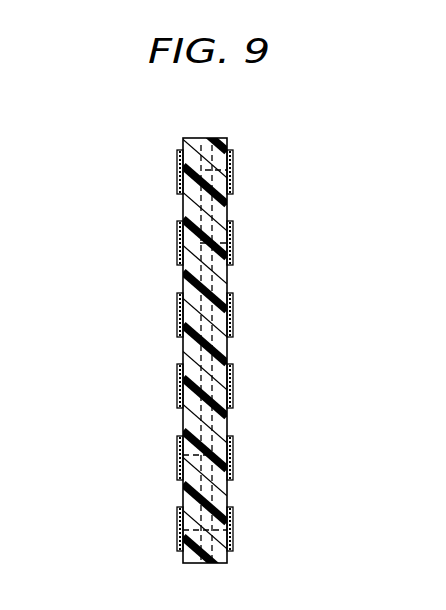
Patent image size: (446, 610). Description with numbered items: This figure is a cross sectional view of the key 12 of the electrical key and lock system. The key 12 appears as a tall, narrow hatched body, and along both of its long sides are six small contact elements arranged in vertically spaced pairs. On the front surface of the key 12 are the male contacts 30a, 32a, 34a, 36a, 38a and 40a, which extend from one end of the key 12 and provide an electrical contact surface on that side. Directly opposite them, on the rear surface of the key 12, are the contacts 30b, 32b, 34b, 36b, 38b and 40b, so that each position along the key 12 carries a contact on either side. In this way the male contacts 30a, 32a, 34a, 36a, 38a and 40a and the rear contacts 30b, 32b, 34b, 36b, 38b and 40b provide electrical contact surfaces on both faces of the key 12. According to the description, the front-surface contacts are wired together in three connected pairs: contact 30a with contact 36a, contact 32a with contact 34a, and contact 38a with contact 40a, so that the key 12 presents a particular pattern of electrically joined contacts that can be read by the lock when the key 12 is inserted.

The key 12 is at (197, 146).
The male contact 30a is at (231, 170).
The contact 30b is at (179, 179).
The male contact 32a is at (231, 243).
The contact 32b is at (179, 251).
The male contact 34a is at (231, 318).
The contact 34b is at (179, 317).
The male contact 36a is at (231, 385).
The contact 36b is at (179, 389).
The male contact 38a is at (231, 455).
The contact 38b is at (179, 463).
The male contact 40a is at (231, 530).
The contact 40b is at (179, 531).